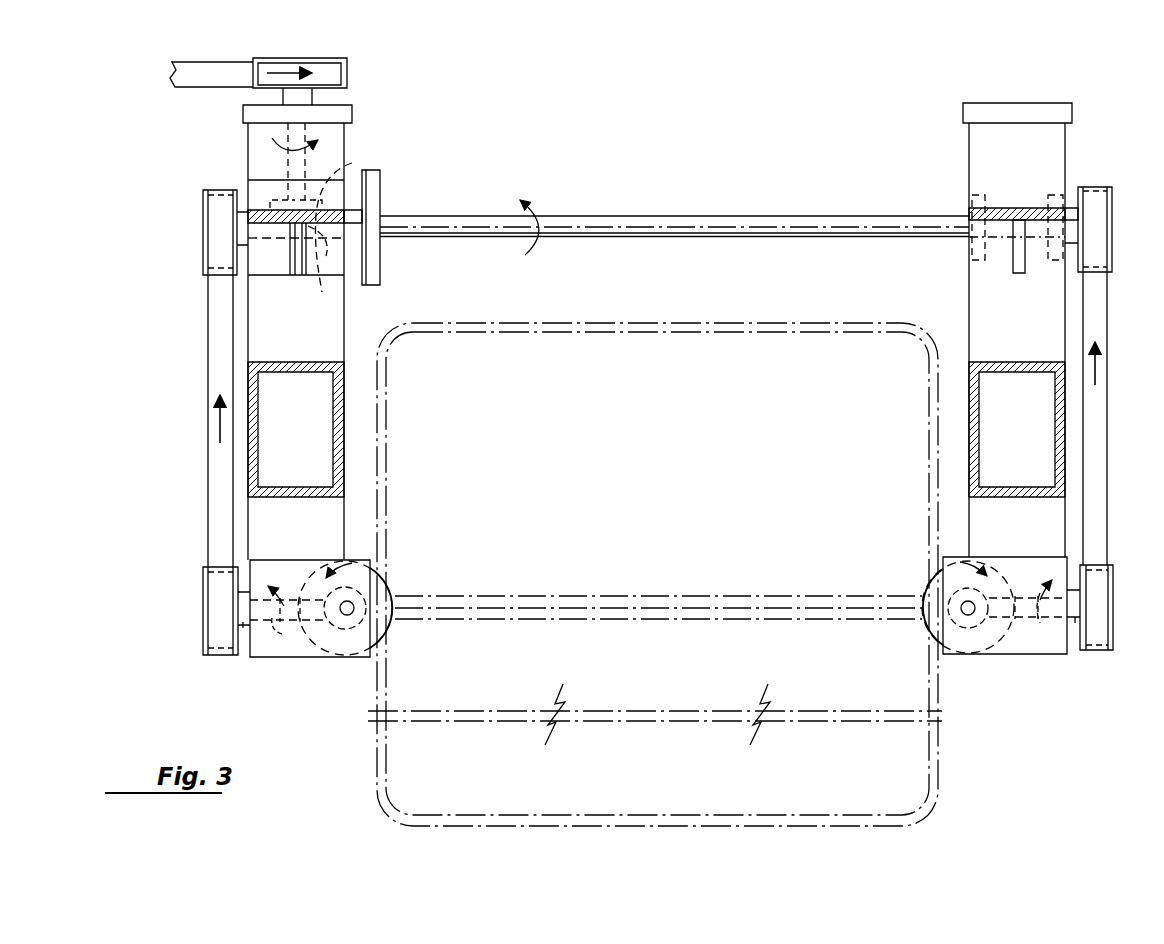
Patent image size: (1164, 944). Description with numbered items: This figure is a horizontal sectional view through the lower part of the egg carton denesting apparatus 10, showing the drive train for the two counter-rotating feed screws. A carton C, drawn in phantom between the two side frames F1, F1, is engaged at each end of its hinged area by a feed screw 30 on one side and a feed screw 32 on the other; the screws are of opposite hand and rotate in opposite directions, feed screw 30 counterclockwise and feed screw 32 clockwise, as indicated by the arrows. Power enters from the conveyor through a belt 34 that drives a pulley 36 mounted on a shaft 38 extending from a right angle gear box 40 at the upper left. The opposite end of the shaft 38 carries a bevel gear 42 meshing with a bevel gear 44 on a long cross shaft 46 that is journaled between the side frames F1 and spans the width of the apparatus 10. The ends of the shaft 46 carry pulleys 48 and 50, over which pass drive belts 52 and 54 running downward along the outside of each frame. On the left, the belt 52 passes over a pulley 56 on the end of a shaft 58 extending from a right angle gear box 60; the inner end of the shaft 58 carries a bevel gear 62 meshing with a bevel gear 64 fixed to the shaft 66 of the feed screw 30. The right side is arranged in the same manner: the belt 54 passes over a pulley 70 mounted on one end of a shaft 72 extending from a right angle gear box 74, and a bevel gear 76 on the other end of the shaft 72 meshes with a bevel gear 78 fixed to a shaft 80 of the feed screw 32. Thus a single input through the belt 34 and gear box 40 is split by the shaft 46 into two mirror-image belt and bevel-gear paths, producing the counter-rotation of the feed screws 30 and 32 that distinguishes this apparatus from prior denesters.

The apparatus 10 is at (700, 165).
The feed screw 30 is at (390, 625).
The feed screw 32 is at (932, 618).
The belt 34 is at (192, 75).
The pulley 36 is at (337, 90).
The shaft 38 is at (283, 96).
The right angle gear box 40 is at (347, 144).
The bevel gear 42 is at (358, 158).
The bevel gear 44 is at (323, 272).
The shaft 46 is at (570, 222).
The pulley 48 is at (203, 240).
The pulley 50 is at (1110, 215).
The drive belt 52 is at (220, 330).
The drive belt 54 is at (1107, 318).
The pulley 56 is at (203, 608).
The shaft 58 is at (244, 658).
The right angle gear box 60 is at (293, 568).
The bevel gear 62 is at (315, 640).
The bevel gear 64 is at (365, 592).
The shaft 66 is at (350, 648).
The pulley 70 is at (1112, 638).
The shaft 72 is at (1077, 623).
The right angle gear box 74 is at (1030, 565).
The bevel gear 76 is at (1003, 627).
The bevel gear 78 is at (975, 627).
The shaft 80 is at (965, 638).
The vertical frame F1 is at (335, 330).
The carton C is at (918, 778).